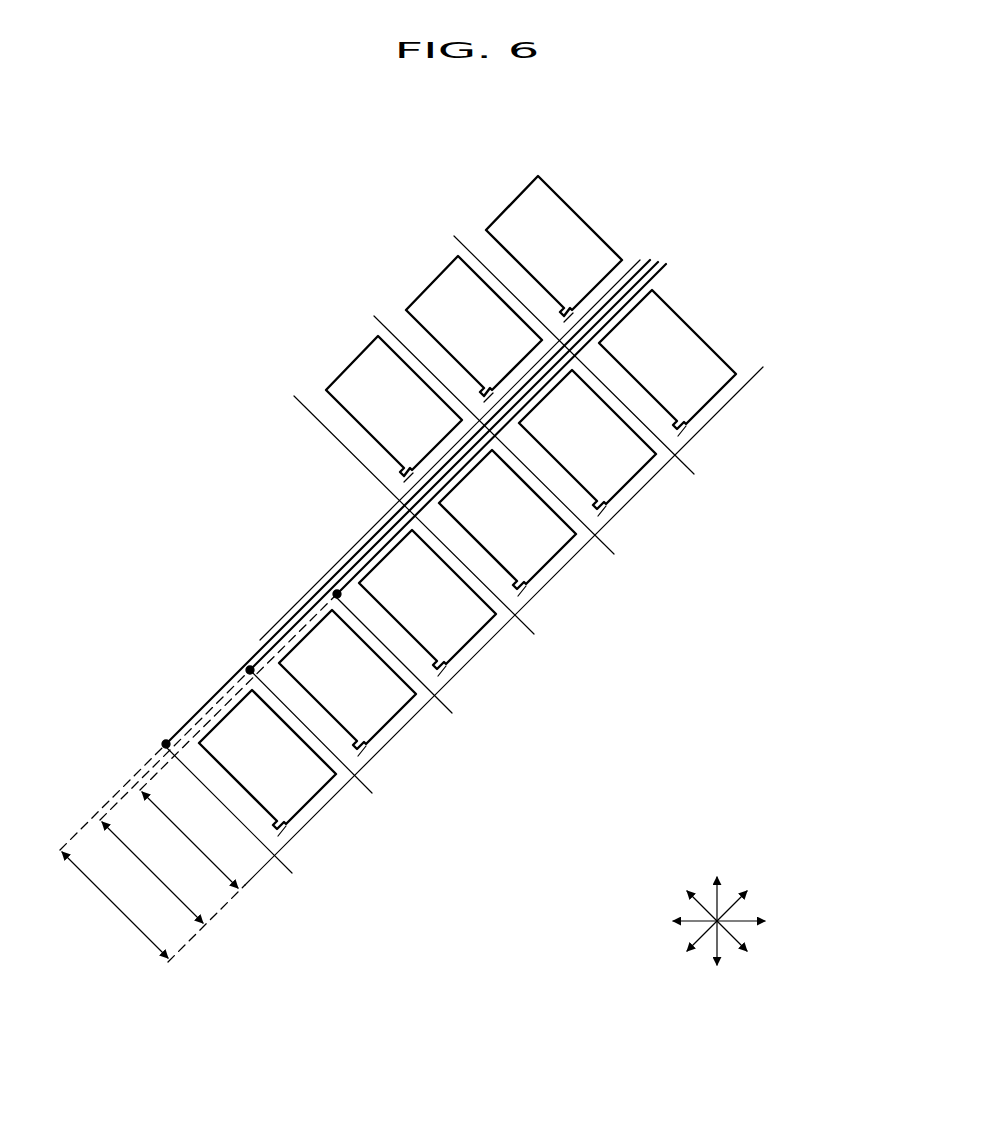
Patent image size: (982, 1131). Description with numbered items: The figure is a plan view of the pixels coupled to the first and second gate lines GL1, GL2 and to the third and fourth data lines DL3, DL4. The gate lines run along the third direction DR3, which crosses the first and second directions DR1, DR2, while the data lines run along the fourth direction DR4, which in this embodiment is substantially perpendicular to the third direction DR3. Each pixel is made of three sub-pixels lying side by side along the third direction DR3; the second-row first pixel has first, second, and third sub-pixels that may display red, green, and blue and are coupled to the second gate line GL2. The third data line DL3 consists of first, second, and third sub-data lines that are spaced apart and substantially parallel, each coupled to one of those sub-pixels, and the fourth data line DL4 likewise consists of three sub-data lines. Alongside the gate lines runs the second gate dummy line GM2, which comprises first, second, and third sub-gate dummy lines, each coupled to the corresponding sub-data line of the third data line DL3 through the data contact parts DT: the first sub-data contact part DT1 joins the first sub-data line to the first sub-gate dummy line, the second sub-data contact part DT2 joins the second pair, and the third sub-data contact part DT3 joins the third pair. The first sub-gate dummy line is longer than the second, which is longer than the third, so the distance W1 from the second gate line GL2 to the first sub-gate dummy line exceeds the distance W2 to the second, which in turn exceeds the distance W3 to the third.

The first gate line GL1 is at (640, 258).
The second gate line GL2 is at (763, 368).
The second gate dummy line GM2 is at (437, 516).
The data contact parts DT is at (240, 628).
The first sub-data contact part DT1 is at (167, 742).
The second sub-data contact part DT2 is at (251, 668).
The third sub-data contact part DT3 is at (293, 571).
The third data line DL3 is at (318, 782).
The fourth data line DL4 is at (505, 484).
The distance W1 is at (115, 905).
The distance W2 is at (152, 872).
The distance W3 is at (190, 840).
The first direction DR1 is at (717, 908).
The second direction DR2 is at (738, 921).
The third direction DR3 is at (730, 907).
The fourth direction DR4 is at (704, 907).